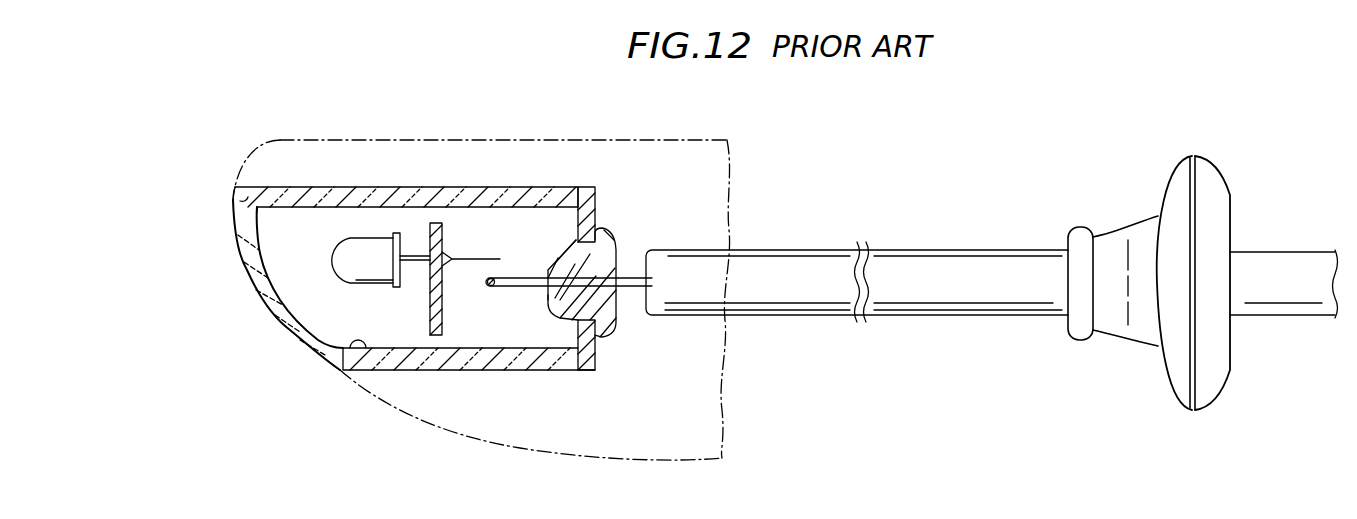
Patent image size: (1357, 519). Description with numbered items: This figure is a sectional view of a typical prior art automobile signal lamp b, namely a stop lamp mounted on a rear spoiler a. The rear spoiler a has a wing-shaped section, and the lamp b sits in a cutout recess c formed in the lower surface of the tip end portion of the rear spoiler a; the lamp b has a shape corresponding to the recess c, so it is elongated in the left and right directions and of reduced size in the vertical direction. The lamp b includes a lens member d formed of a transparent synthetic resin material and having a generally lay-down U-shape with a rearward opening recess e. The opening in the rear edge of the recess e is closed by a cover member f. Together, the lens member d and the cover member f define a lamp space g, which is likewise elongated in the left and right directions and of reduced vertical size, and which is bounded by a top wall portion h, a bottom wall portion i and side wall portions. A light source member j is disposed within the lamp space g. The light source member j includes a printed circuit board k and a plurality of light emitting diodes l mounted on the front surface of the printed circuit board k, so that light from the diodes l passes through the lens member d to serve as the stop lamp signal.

The rear spoiler a is at (610, 140).
The automobile signal lamp b is at (432, 372).
The cutout recess c is at (240, 200).
The lens member d is at (246, 278).
The rearward opening recess e is at (352, 350).
The cover member f is at (598, 216).
The lamp space g is at (300, 265).
The top wall portion h is at (468, 187).
The bottom wall portion i is at (495, 372).
The light source member j is at (390, 77).
The printed circuit board k is at (431, 232).
The light emitting diode l is at (363, 240).